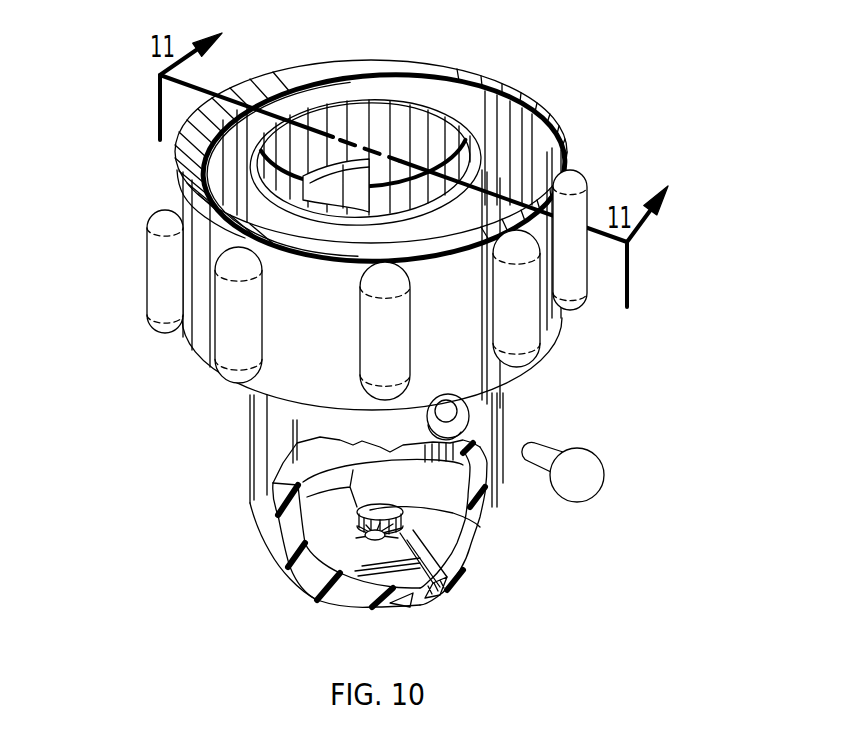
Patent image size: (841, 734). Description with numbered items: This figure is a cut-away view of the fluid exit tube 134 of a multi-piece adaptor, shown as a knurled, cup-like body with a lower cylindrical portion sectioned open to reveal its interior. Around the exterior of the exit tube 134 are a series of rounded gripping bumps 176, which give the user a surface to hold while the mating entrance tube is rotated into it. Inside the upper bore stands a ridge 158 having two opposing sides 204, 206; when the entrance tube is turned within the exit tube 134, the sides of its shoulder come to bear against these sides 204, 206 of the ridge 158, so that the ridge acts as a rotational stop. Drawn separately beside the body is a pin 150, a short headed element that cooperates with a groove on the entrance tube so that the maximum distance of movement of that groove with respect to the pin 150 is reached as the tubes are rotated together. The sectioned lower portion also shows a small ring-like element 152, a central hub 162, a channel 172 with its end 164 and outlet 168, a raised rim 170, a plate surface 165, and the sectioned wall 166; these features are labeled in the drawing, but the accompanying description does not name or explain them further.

The exit tube 134 is at (600, 353).
The pin 150 is at (587, 482).
The O-ring 152 is at (468, 418).
The ridge 158 is at (350, 165).
The hub 162 is at (377, 503).
The hatched end of channel 164 is at (468, 572).
The plate surface 165 is at (375, 580).
The sectioned wall 166 is at (330, 585).
The channel outlet 168 is at (440, 590).
The raised rim 170 is at (340, 498).
The channel 172 is at (400, 507).
The gripping bumps 176 is at (230, 332).
The side of ridge 204 is at (248, 228).
The side of ridge 206 is at (440, 150).